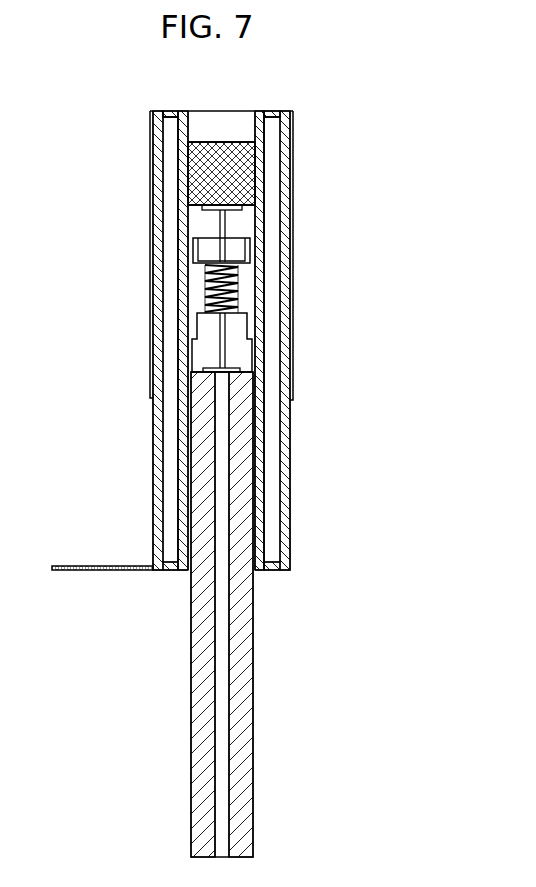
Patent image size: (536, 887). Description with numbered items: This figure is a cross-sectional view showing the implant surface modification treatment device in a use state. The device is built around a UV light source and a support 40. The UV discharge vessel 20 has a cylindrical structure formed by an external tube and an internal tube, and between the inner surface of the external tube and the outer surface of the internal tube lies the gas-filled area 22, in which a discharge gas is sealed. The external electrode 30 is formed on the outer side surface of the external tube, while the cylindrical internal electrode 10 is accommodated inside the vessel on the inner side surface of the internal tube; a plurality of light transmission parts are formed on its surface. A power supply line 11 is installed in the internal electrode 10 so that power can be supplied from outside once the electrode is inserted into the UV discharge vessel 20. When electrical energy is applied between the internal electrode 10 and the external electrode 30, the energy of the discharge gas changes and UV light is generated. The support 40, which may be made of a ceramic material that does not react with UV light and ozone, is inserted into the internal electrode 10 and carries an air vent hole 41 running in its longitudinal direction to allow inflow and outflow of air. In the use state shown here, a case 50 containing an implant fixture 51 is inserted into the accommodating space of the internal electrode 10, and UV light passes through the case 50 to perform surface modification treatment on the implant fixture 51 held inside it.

The internal electrode 10 is at (207, 187).
The power supply line 11 is at (82, 566).
The UV discharge vessel 20 is at (283, 262).
The gas-filled area 22 is at (275, 308).
The external electrode 30 is at (292, 207).
The support 40 is at (243, 632).
The air vent hole 41 is at (222, 692).
The case 50 is at (203, 307).
The implant fixture 51 is at (205, 278).